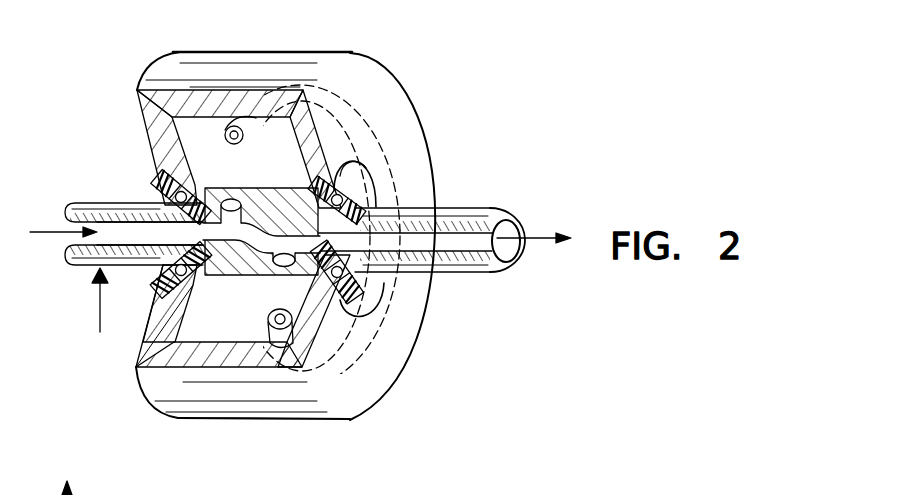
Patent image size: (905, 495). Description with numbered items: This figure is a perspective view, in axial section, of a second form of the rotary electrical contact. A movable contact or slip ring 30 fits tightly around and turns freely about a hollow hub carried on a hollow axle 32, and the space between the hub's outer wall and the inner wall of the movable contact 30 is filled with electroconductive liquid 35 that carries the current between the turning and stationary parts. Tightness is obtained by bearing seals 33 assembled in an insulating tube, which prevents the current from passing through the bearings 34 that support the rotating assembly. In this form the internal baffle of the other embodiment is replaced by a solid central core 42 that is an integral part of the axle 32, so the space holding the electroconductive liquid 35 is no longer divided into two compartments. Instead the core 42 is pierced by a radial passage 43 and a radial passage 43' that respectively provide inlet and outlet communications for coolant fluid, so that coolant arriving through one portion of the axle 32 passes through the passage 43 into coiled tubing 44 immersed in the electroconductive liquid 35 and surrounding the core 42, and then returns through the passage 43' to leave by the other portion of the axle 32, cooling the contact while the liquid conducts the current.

The movable contact 30 is at (218, 108).
The hollow axle 32 is at (110, 208).
The bearing seals 33 is at (155, 185).
The bearings 34 is at (325, 178).
The electroconductive liquid 35 is at (195, 146).
The solid central core 42 is at (292, 167).
The radial passage 43 is at (234, 189).
The radial passage 43' is at (257, 282).
The coiled tubing 44 is at (282, 328).